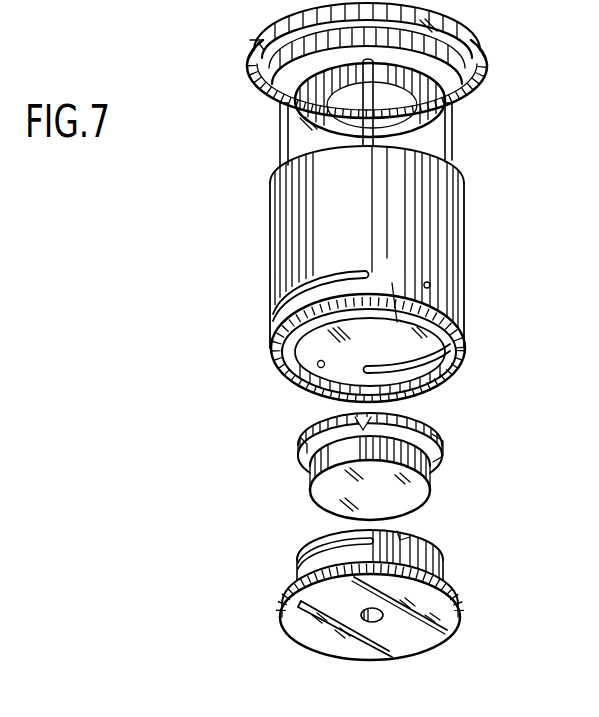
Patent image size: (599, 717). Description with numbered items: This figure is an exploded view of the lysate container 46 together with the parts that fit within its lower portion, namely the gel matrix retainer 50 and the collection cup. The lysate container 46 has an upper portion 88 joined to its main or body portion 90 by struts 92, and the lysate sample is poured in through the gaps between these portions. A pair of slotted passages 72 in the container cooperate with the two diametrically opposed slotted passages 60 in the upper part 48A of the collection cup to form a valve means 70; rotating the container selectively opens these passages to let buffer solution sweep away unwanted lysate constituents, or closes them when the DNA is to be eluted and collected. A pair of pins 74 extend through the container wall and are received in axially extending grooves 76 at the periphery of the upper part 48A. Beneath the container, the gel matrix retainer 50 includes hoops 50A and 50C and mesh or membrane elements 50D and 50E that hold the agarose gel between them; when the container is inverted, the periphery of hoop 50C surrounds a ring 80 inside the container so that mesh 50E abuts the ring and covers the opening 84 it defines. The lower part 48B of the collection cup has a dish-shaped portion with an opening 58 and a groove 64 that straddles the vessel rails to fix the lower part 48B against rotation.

The valve means 70 is at (226, 0).
The lysate container 46 is at (490, 42).
The upper portion 88 is at (473, 73).
The struts 92 is at (457, 148).
The main or body portion 90 is at (467, 229).
The slotted passages 72 is at (351, 270).
The ring 80 is at (386, 292).
The pins 74 is at (431, 286).
The opening 84 is at (371, 326).
The gel matrix retainer 50 is at (369, 474).
The hoop 50A is at (299, 470).
The hoop 50C is at (432, 432).
The nylon mesh or polycarbonate membrane element 50D is at (333, 498).
The nylon mesh or polycarbonate membrane element 50E is at (443, 455).
The axially extending grooves 76 is at (412, 536).
The slotted passages 60 is at (297, 564).
The upper part of collection cup 48A is at (381, 544).
The lower part of collection cup 48B is at (401, 622).
The opening 58 is at (362, 612).
The groove 64 is at (391, 656).